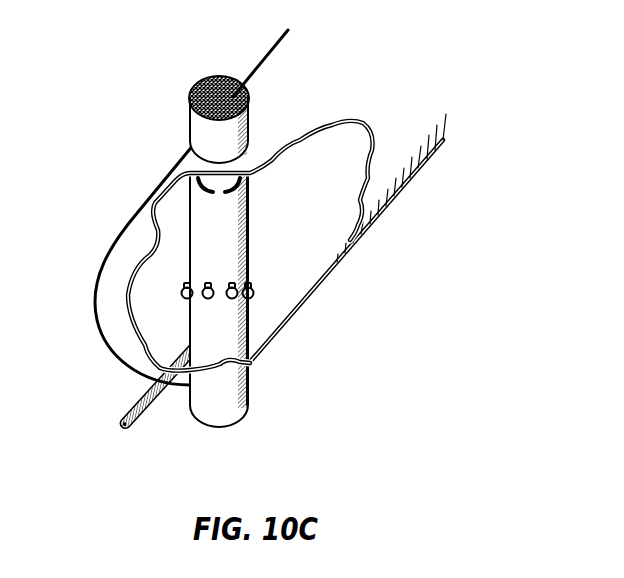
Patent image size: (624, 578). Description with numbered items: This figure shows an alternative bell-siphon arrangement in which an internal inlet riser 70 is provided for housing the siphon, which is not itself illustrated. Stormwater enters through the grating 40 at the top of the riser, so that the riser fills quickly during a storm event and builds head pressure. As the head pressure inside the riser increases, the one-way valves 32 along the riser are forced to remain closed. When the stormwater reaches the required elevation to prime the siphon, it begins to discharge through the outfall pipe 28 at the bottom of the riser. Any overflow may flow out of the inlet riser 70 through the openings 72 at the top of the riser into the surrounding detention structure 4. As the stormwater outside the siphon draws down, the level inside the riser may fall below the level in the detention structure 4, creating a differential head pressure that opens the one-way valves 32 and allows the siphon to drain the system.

The detention structure 4 is at (148, 291).
The outfall pipe 28 is at (138, 402).
The one-way valves 32 is at (206, 297).
The grating 40 is at (195, 83).
The internal inlet riser 70 is at (203, 218).
The openings 72 is at (241, 197).